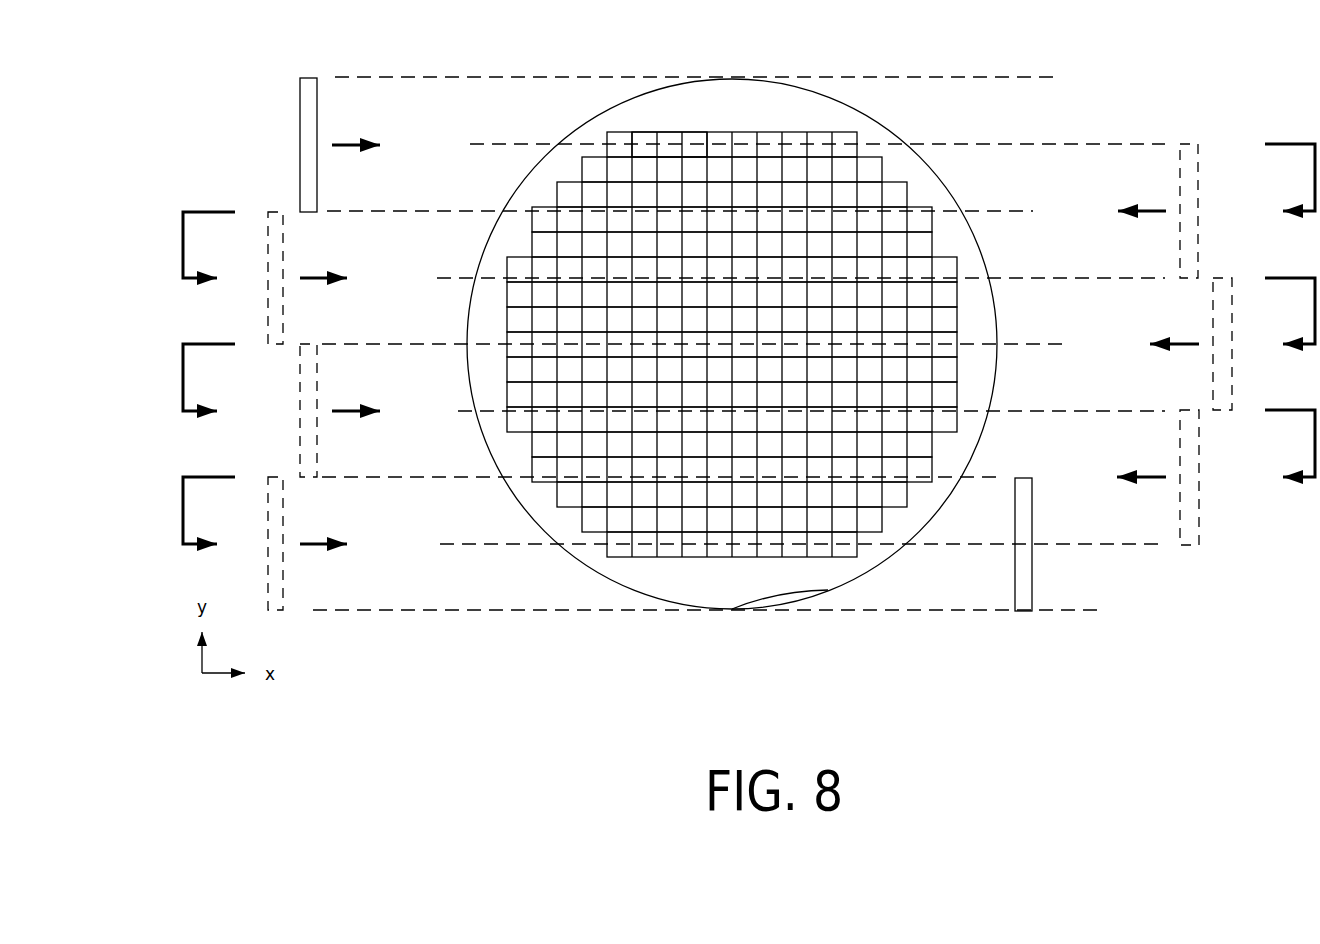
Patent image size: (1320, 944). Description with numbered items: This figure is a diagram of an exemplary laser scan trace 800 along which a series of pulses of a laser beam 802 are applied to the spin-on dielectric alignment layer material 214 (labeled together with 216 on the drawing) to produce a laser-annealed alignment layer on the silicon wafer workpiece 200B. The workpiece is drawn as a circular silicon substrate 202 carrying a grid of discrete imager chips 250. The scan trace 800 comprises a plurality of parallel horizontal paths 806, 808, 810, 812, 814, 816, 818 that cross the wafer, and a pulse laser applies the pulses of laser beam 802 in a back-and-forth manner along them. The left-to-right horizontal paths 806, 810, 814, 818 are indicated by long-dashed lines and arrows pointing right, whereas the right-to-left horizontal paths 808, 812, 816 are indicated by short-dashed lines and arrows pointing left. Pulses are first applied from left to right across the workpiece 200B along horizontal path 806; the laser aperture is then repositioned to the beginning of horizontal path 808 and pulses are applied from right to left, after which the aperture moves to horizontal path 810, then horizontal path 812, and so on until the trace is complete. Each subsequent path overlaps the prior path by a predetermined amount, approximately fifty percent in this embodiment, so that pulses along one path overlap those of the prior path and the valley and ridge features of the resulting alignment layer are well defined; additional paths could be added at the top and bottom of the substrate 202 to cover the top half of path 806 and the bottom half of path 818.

The laser scan trace 800 is at (1132, 66).
The laser beam 802 is at (300, 162).
The horizontal path 806 is at (350, 142).
The horizontal path 808 is at (1143, 210).
The horizontal path 810 is at (317, 277).
The horizontal path 812 is at (1174, 343).
The horizontal path 814 is at (350, 408).
The horizontal path 816 is at (1143, 472).
The horizontal path 818 is at (317, 543).
The silicon substrate 202 is at (853, 108).
The imager chips 250 is at (697, 138).
The silicon wafer workpiece 200B is at (828, 590).
The alignment layer material 214 is at (732, 360).
The exposure fields 216 is at (775, 588).